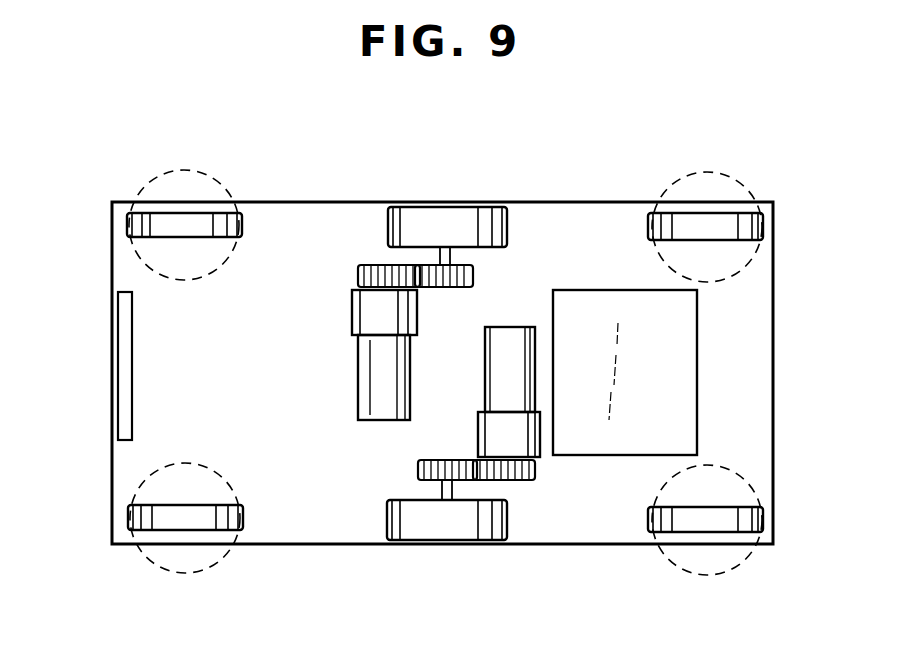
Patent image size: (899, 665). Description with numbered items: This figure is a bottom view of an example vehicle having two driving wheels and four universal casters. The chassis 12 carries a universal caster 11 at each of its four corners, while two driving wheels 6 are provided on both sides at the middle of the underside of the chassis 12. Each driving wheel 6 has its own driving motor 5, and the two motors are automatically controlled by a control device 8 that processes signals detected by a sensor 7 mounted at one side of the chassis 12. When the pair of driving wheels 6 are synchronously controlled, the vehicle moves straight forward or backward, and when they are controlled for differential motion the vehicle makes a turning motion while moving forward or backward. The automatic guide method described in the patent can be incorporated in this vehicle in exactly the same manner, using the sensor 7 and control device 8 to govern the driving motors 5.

The driving motor 5 is at (380, 380).
The driving wheel 6 is at (483, 225).
The sensor 7 is at (125, 361).
The control device 8 is at (683, 373).
The universal caster 11 is at (172, 222).
The chassis 12 is at (322, 200).